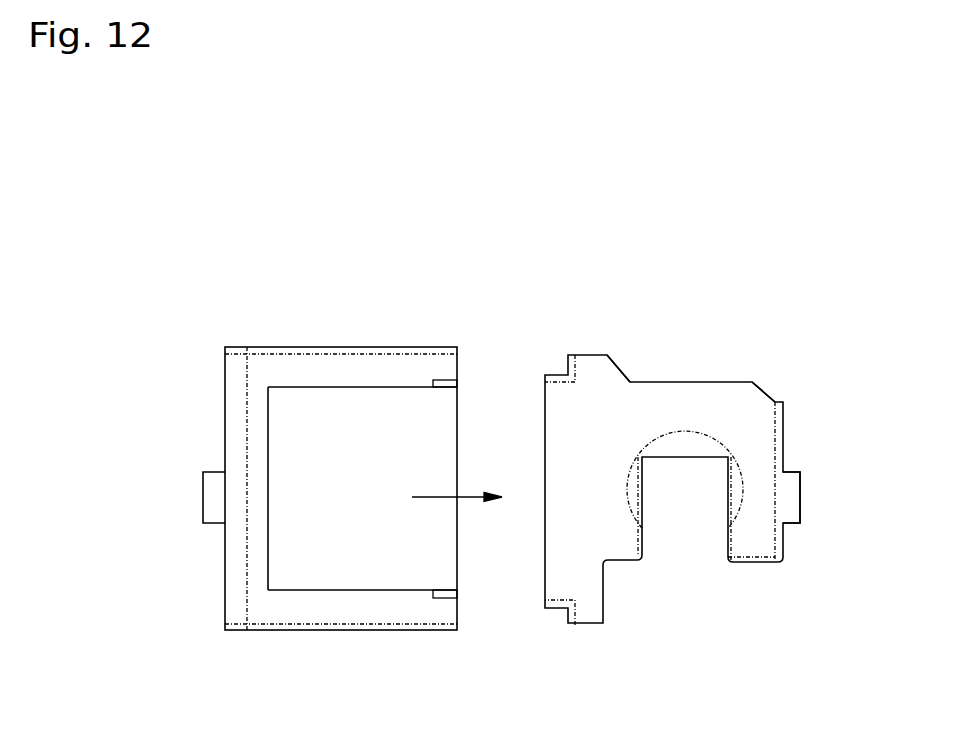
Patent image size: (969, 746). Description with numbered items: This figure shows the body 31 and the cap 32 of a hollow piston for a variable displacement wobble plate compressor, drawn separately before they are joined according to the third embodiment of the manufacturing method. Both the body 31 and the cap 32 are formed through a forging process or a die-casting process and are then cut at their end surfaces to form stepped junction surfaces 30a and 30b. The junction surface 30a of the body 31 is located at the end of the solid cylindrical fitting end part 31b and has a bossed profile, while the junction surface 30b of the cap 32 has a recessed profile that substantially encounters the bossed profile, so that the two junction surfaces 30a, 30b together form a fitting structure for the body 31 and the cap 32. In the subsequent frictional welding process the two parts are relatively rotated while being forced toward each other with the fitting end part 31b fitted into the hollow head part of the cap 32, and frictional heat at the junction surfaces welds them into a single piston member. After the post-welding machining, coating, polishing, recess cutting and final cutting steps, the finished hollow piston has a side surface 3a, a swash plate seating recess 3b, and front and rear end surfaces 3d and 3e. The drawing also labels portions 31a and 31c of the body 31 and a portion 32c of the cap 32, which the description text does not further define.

The cap 32 is at (351, 436).
The side surface 3a is at (329, 353).
The front end surface 3d is at (247, 410).
The projection 32c is at (215, 496).
The junction surface 30b is at (446, 383).
The body 31 is at (672, 449).
The swash plate seating recess 3b is at (685, 523).
The junction surface 30a is at (548, 380).
The solid cylindrical fitting end part 31b is at (598, 372).
The inclined portion 31a is at (753, 408).
The rear end surface 3e is at (776, 440).
The projection 31c is at (793, 495).